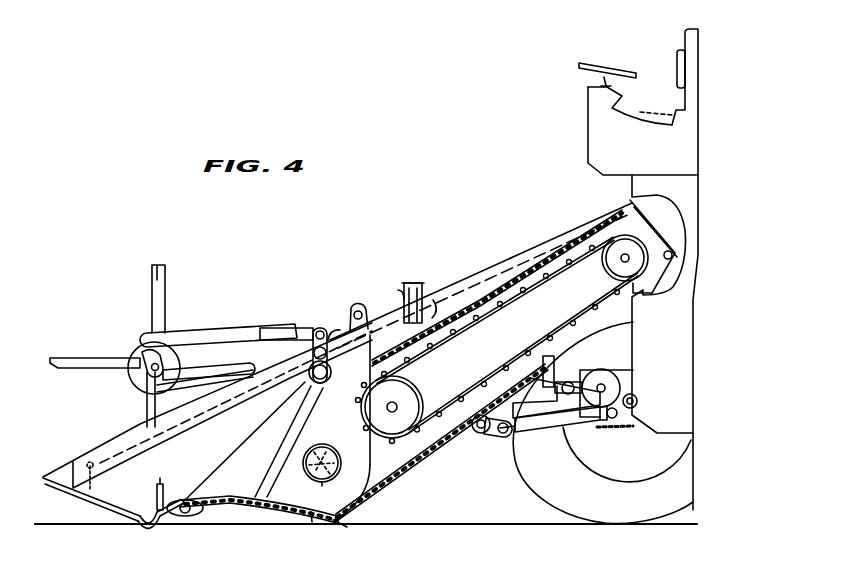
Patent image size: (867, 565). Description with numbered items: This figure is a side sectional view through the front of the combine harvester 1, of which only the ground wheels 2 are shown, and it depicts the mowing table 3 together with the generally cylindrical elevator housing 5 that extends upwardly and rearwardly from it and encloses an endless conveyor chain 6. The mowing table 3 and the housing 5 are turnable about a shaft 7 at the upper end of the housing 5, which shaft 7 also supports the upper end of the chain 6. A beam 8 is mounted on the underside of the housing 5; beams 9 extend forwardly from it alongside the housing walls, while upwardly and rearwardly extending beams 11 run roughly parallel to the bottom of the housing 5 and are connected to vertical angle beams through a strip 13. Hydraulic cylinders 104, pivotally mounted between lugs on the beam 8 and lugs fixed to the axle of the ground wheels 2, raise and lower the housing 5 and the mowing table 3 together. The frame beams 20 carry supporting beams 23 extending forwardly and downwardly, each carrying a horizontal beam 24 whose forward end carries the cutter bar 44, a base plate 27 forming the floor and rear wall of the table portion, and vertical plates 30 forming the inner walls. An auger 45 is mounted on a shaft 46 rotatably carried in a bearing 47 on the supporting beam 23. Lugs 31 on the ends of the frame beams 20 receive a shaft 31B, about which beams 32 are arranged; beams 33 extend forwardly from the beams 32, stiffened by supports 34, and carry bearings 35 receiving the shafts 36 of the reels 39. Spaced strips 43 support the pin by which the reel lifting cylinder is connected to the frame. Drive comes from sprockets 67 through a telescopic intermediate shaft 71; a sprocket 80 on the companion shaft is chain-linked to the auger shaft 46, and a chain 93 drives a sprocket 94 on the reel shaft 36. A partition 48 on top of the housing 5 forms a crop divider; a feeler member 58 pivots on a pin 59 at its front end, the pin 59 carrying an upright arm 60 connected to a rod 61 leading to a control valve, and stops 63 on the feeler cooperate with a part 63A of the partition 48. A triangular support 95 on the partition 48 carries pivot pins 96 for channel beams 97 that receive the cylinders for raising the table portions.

The tractor 1 is at (588, 152).
The ground wheels 2 is at (568, 497).
The mowing table 3 is at (355, 508).
The elevator housing 5 is at (403, 466).
The endless conveyor chain 6 is at (493, 370).
The shaft 7 is at (622, 260).
The beam 8 is at (498, 438).
The beams 9 is at (474, 433).
The beams 11 is at (509, 398).
The strip 13 is at (548, 387).
The telescopic intermediate shaft 71 is at (569, 400).
The sprockets 67 is at (620, 372).
The hydraulic cylinders 104 is at (545, 431).
The partition 48 is at (523, 246).
The frame beams 20 is at (312, 390).
The supporting beams 23 is at (272, 417).
The horizontal beam 24 is at (246, 496).
The base plate 27 is at (345, 525).
The vertical plates 30 is at (312, 522).
The cutter bar 44 is at (200, 516).
The auger 45 is at (330, 456).
The shaft 46 is at (340, 465).
The bearing 47 is at (330, 479).
The rod 61 is at (97, 452).
The feeler member 58 is at (95, 500).
The pivot pin 59 is at (82, 487).
The upright arm 60 is at (96, 478).
The stops 63 is at (163, 492).
The part of partition 63A is at (152, 492).
The beams 32 is at (318, 328).
The lugs 31 is at (328, 378).
The shaft 31B is at (327, 354).
The strips 43 is at (363, 308).
The sprocket 80 is at (336, 328).
The beams 33 is at (226, 330).
The supports 34 is at (277, 328).
The reel 39 is at (172, 289).
The shaft 36 is at (133, 359).
The sprocket 94 is at (178, 360).
The bearings 35 is at (140, 375).
The chain 93 is at (188, 388).
The channel beam 97 is at (418, 282).
The pivot pins 96 is at (402, 288).
The triangular support 95 is at (436, 300).